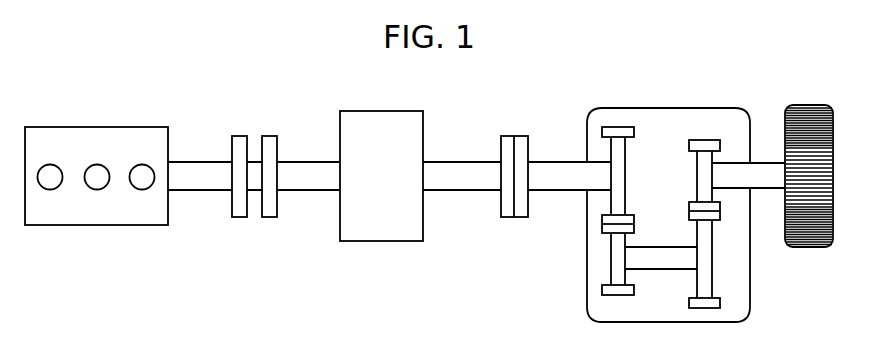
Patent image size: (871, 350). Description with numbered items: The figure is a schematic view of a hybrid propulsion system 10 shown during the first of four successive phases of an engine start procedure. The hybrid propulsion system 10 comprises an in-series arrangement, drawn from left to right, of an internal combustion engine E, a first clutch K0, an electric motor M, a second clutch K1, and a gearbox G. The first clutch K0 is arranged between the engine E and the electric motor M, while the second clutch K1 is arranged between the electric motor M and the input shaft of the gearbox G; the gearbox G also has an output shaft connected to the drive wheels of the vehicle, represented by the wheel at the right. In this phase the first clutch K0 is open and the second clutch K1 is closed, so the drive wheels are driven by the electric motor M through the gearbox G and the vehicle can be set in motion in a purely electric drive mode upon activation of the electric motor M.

The hybrid propulsion system 10 is at (567, 102).
The internal combustion engine E is at (128, 138).
The electric motor M is at (369, 123).
The first clutch K0 is at (255, 232).
The second clutch K1 is at (513, 237).
The gearbox G is at (673, 118).